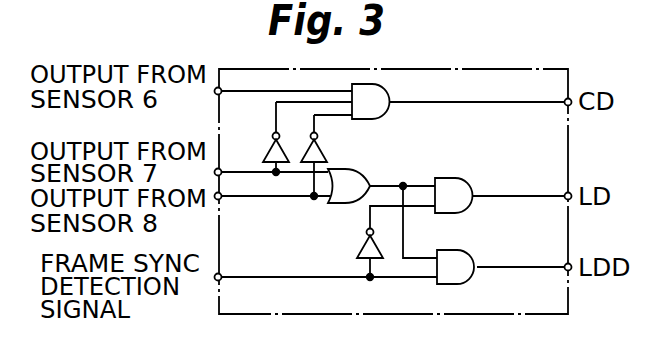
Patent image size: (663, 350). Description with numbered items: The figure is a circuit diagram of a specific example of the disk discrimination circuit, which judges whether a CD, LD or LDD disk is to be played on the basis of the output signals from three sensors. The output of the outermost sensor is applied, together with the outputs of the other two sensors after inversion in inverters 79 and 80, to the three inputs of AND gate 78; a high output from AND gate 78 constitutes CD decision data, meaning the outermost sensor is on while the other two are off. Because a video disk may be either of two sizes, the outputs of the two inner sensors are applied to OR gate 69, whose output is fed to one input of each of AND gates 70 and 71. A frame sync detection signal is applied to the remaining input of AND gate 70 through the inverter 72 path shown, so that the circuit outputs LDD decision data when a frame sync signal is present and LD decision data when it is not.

The AND gate 78 is at (390, 90).
The inverter 79 is at (268, 151).
The inverter 80 is at (323, 151).
The OR gate 69 is at (365, 170).
The AND gate 70 is at (462, 178).
The AND gate 71 is at (465, 252).
The inverter 72 is at (362, 247).